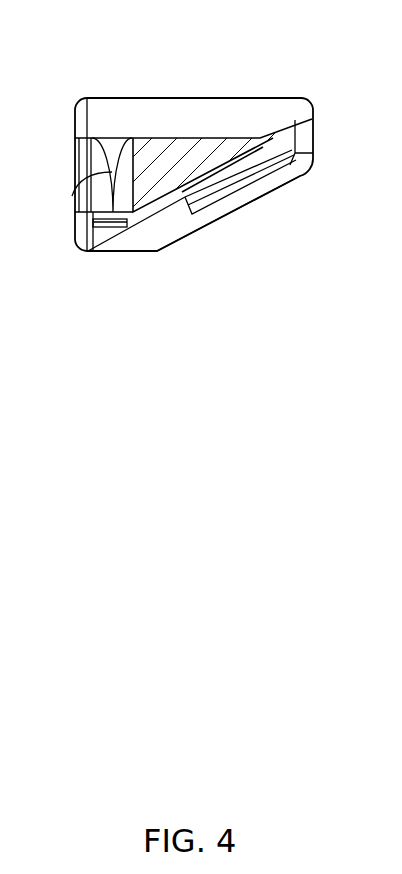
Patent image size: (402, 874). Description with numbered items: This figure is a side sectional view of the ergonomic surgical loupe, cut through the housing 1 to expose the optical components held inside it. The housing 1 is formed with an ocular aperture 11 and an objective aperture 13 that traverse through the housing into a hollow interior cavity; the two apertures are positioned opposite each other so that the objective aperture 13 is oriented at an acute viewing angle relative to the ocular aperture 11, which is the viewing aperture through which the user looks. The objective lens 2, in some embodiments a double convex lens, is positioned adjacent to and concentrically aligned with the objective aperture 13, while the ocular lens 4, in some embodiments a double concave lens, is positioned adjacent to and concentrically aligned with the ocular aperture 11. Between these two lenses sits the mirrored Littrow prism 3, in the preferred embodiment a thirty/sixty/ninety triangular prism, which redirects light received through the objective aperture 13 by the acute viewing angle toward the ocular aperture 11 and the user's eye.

The housing 1 is at (191, 79).
The objective lens 2 is at (243, 170).
The mirrored Littrow prism 3 is at (178, 155).
The ocular lens 4 is at (76, 186).
The ocular aperture 11 is at (70, 171).
The objective aperture 13 is at (262, 198).